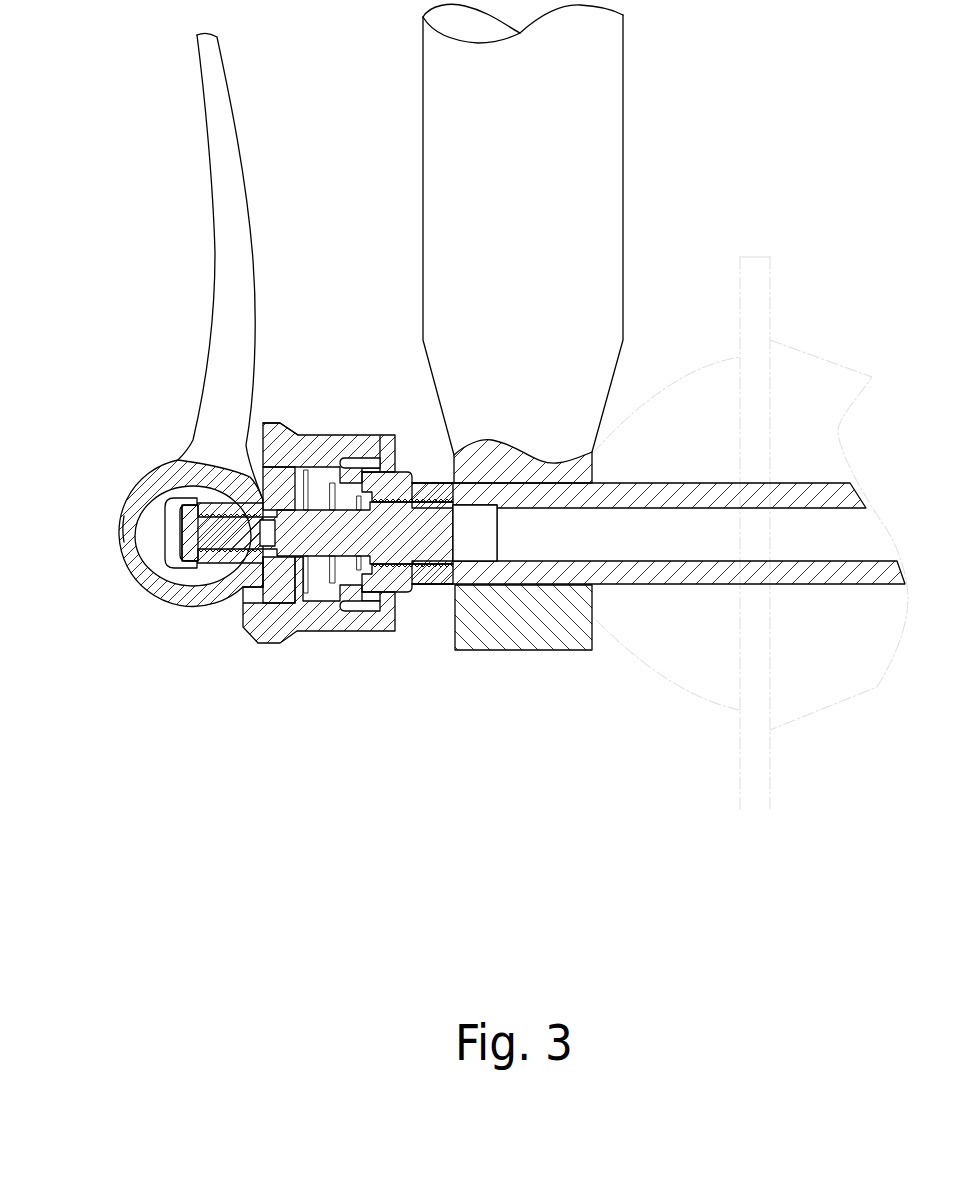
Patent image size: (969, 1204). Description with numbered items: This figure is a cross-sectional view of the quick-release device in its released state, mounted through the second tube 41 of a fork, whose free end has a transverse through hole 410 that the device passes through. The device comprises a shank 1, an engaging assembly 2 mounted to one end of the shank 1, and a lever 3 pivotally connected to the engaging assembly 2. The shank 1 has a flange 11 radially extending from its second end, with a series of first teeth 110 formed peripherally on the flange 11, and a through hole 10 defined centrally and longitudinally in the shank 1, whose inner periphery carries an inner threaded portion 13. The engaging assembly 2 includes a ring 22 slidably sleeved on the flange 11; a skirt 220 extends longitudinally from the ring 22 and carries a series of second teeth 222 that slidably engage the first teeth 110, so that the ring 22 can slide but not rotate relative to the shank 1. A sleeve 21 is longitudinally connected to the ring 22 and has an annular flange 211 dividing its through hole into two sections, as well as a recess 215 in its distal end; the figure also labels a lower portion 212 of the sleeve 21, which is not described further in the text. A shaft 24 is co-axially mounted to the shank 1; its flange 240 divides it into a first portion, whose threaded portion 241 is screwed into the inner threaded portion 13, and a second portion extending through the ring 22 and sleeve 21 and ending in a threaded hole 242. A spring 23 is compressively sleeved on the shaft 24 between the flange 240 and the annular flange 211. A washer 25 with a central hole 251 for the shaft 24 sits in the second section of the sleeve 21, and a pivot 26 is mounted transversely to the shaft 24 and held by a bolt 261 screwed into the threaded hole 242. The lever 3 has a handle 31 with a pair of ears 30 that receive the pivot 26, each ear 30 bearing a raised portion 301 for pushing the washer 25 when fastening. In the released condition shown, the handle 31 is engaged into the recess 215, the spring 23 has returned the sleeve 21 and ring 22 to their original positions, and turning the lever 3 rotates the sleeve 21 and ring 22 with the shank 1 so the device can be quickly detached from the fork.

The shank 1 is at (682, 494).
The through hole 10 is at (833, 531).
The flange 11 is at (413, 492).
The first teeth 110 is at (383, 588).
The inner threaded portion 13 is at (455, 586).
The engaging assembly 2 is at (186, 689).
The sleeve 21 is at (285, 622).
The annular flange 211 is at (287, 466).
The lower retaining block 212 is at (280, 618).
The recess 215 is at (265, 424).
The ring 22 is at (363, 596).
The skirt 220 is at (390, 453).
The second teeth 222 is at (350, 600).
The spring 23 is at (337, 459).
The shaft 24 is at (178, 480).
The flange 240 is at (333, 584).
The threaded portion 241 is at (450, 572).
The threaded hole 242 is at (216, 568).
The washer 25 is at (247, 577).
The central hole 251 is at (263, 572).
The pivot 26 is at (196, 567).
The bolt 261 is at (188, 541).
The lever 3 is at (290, 126).
The ears 30 is at (137, 527).
The raised portion 301 is at (124, 536).
The handle 31 is at (226, 212).
The second tube 41 is at (593, 144).
The through hole 410 is at (535, 585).